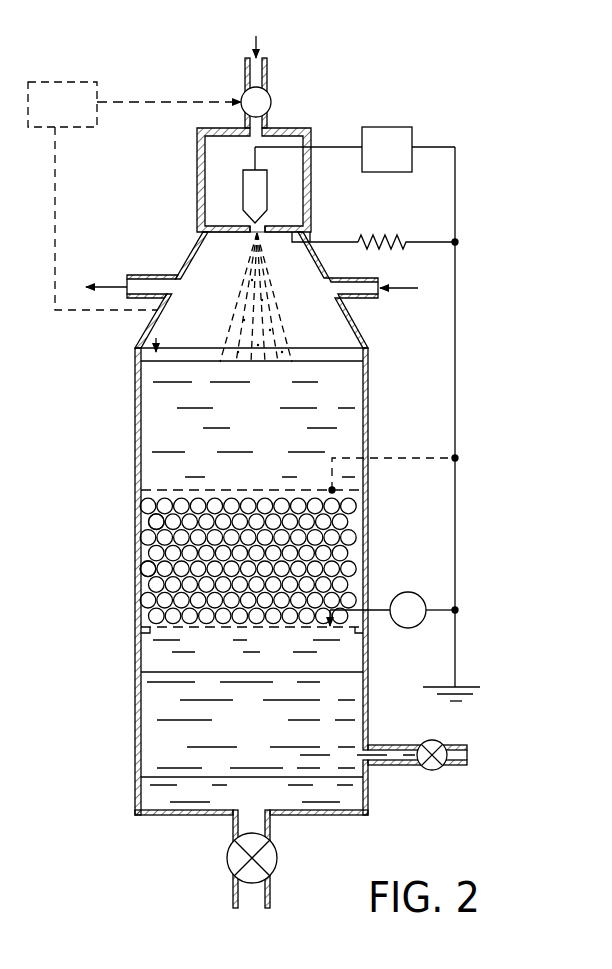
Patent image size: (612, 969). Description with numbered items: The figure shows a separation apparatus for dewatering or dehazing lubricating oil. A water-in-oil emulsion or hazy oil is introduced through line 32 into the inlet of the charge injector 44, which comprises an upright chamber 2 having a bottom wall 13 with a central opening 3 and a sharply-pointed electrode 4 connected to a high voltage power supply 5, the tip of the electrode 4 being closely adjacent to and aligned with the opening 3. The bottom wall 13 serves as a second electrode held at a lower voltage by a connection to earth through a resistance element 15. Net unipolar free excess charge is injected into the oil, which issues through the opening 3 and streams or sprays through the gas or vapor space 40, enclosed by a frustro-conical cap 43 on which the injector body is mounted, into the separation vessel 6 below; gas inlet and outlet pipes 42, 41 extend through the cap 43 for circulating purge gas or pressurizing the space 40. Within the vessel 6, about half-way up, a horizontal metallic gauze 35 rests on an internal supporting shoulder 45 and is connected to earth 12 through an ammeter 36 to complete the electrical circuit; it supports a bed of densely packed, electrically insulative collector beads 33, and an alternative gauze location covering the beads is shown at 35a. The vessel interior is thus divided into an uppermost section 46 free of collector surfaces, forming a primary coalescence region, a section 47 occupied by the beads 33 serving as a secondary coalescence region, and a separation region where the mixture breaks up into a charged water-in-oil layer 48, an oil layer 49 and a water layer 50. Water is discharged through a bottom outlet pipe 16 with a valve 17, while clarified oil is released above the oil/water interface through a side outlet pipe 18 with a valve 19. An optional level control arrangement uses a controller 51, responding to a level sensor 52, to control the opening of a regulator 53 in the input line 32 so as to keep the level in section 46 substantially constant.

The chamber 2 is at (197, 226).
The central opening 3 is at (262, 234).
The pointed electrode 4 is at (258, 198).
The high voltage power supply 5 is at (394, 164).
The separation vessel 6 is at (138, 608).
The earth 12 is at (474, 686).
The bottom wall 13 is at (228, 233).
The resistance element 15 is at (392, 235).
The outlet pipe 16 is at (233, 823).
The valve 17 is at (268, 866).
The outlet pipe 18 is at (462, 765).
The valve 19 is at (425, 770).
The supply line 32 is at (267, 66).
The collector beads 33 is at (150, 565).
The metallic gauze 35 is at (258, 627).
The gauze electrode 35a is at (208, 490).
The ammeter 36 is at (408, 592).
The gas or vapor space 40 is at (312, 315).
The gas outlet pipe 41 is at (127, 276).
The gas inlet pipe 42 is at (365, 278).
The frustro-conical cap 43 is at (177, 271).
The charge injector 44 is at (318, 169).
The internal supporting shoulder 45 is at (358, 633).
The uppermost section 46 is at (267, 425).
The section occupied by beads 47 is at (348, 507).
The charged water-in-oil layer 48 is at (222, 657).
The oil layer 49 is at (172, 732).
The water layer 50 is at (196, 790).
The controller 51 is at (68, 120).
The level sensor 52 is at (157, 340).
The regulator 53 is at (272, 98).